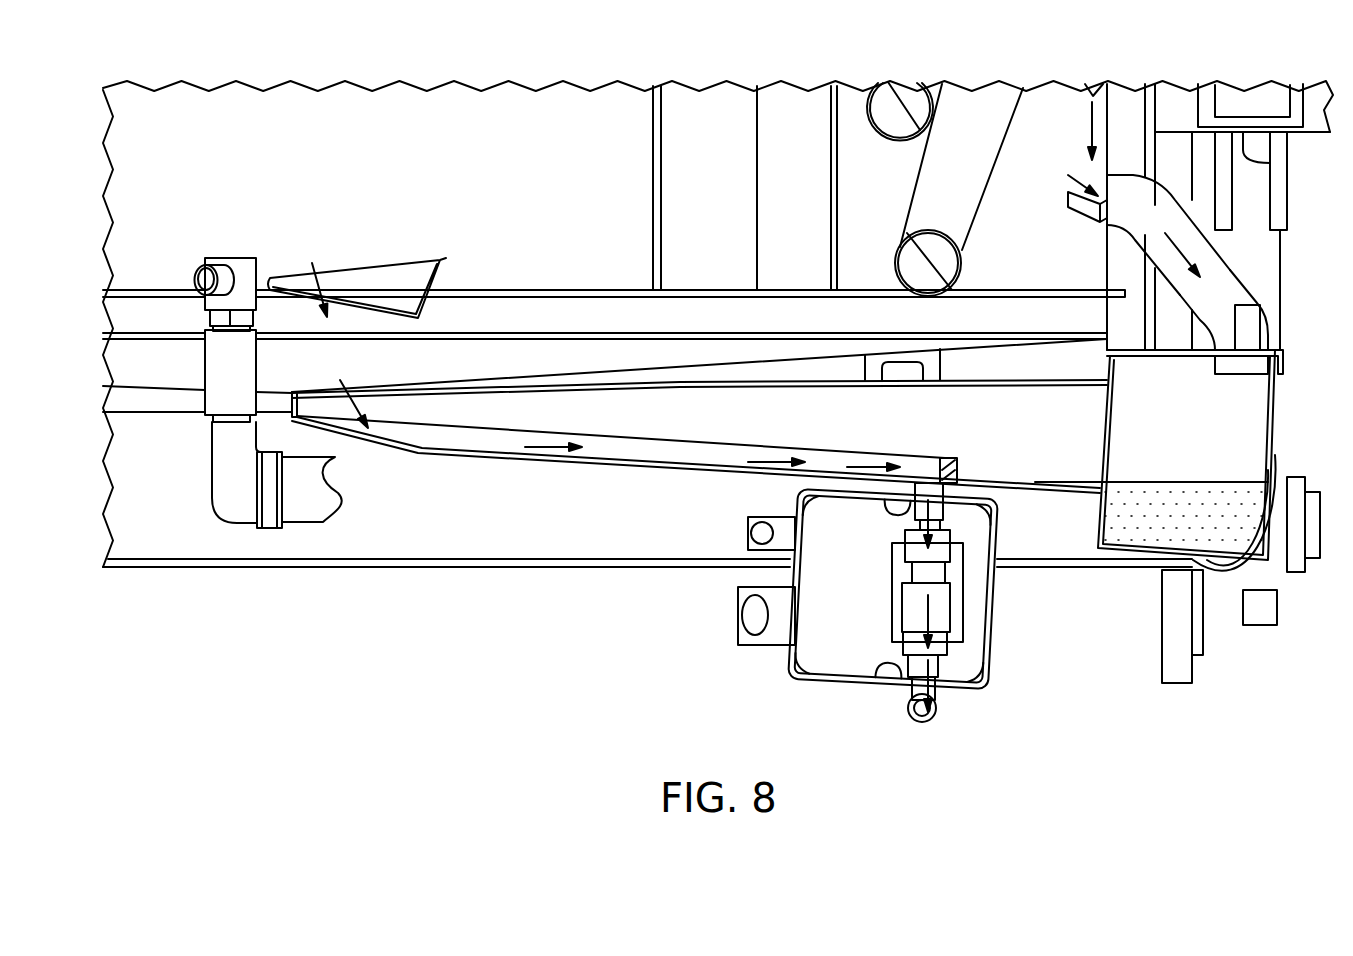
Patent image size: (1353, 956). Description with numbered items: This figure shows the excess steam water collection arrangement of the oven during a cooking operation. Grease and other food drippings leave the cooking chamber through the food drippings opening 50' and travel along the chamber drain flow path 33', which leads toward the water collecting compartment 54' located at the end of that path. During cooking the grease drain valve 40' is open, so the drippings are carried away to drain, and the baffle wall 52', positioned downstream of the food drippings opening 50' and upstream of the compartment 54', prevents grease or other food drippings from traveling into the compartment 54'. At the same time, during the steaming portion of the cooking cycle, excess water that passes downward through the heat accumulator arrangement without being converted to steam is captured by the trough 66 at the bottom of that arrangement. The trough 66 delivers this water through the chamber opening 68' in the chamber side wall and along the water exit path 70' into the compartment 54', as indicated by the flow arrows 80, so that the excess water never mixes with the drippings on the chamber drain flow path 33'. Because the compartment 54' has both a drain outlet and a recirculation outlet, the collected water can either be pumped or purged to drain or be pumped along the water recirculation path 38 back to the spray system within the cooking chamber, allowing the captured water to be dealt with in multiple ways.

The chamber drain flow path 33' is at (696, 417).
The water recirculation path 38 is at (312, 517).
The grease drain valve 40' is at (868, 605).
The food drippings opening 50' is at (909, 455).
The baffle wall 52' is at (964, 447).
The water collecting compartment 54' is at (1182, 455).
The trough 66 is at (1087, 212).
The chamber opening 68' is at (1168, 235).
The water exit path 70' is at (1253, 298).
The flow arrows 80 is at (1088, 123).